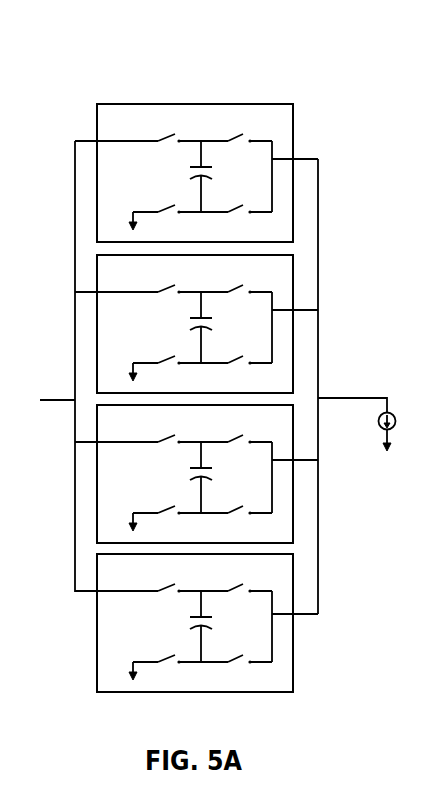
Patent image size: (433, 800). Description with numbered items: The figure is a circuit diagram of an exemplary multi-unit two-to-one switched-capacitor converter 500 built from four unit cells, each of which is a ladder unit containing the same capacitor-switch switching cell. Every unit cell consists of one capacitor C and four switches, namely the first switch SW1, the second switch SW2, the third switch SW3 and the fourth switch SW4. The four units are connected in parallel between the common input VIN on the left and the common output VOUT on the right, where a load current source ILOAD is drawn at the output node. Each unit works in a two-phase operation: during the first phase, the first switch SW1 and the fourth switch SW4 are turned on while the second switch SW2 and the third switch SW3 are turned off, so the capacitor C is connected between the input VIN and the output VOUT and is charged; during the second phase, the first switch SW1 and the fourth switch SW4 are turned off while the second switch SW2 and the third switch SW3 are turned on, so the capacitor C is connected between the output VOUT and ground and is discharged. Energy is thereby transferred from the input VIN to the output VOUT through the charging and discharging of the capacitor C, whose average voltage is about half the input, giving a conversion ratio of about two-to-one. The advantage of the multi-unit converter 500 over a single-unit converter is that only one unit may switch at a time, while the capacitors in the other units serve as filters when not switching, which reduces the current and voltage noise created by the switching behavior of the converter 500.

The multi-unit 2-to-1 SC converter 500 is at (288, 77).
The switch 1 SW1 is at (162, 372).
The switch 2 SW2 is at (236, 355).
The switch 3 SW3 is at (156, 426).
The switch 4 SW4 is at (236, 426).
The capacitor C is at (203, 393).
The input VIN is at (50, 390).
The output VOUT is at (353, 394).
The load current source ILOAD is at (367, 431).